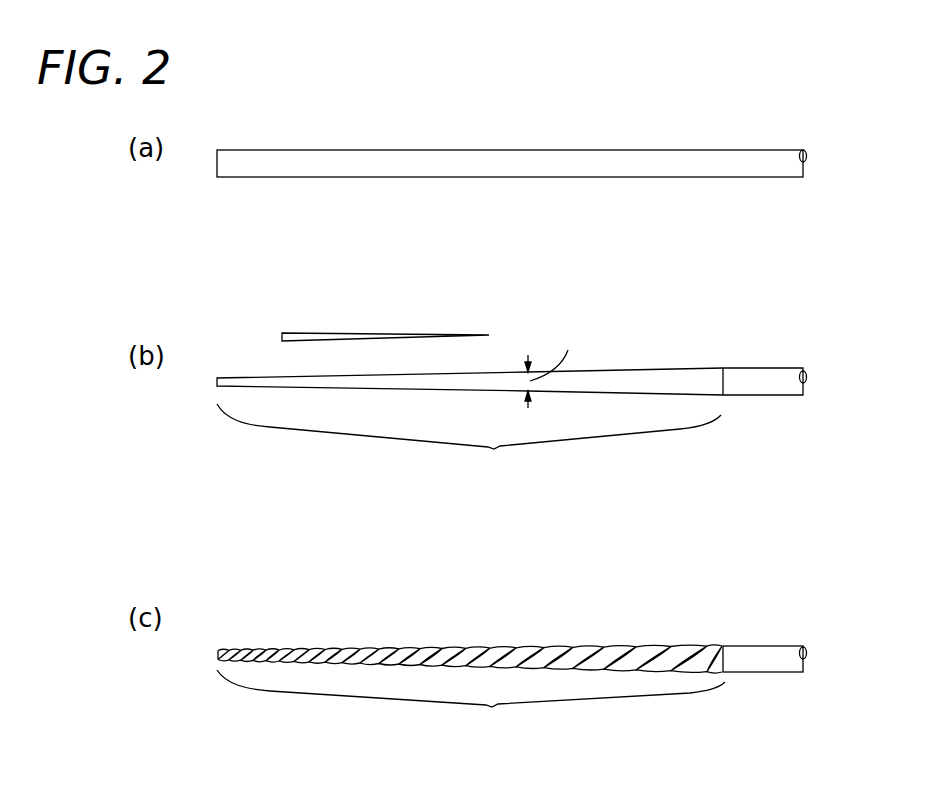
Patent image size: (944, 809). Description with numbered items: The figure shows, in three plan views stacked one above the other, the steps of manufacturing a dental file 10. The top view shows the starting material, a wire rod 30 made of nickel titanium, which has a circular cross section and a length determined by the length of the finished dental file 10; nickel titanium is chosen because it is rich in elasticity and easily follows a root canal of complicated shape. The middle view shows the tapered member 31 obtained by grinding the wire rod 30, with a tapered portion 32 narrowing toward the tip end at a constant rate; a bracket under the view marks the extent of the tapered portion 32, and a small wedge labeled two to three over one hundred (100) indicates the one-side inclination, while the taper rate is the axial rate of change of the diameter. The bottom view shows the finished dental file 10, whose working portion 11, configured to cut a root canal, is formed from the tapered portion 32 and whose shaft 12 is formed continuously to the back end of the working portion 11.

The wire rod 30 is at (768, 165).
The taper dimension (2 to 3 : 100) 100 is at (348, 329).
The tapered member 31 is at (512, 392).
The tapered portion 32 is at (469, 443).
The dental file 10 is at (512, 648).
The working portion 11 is at (471, 692).
The shaft 12 is at (768, 655).